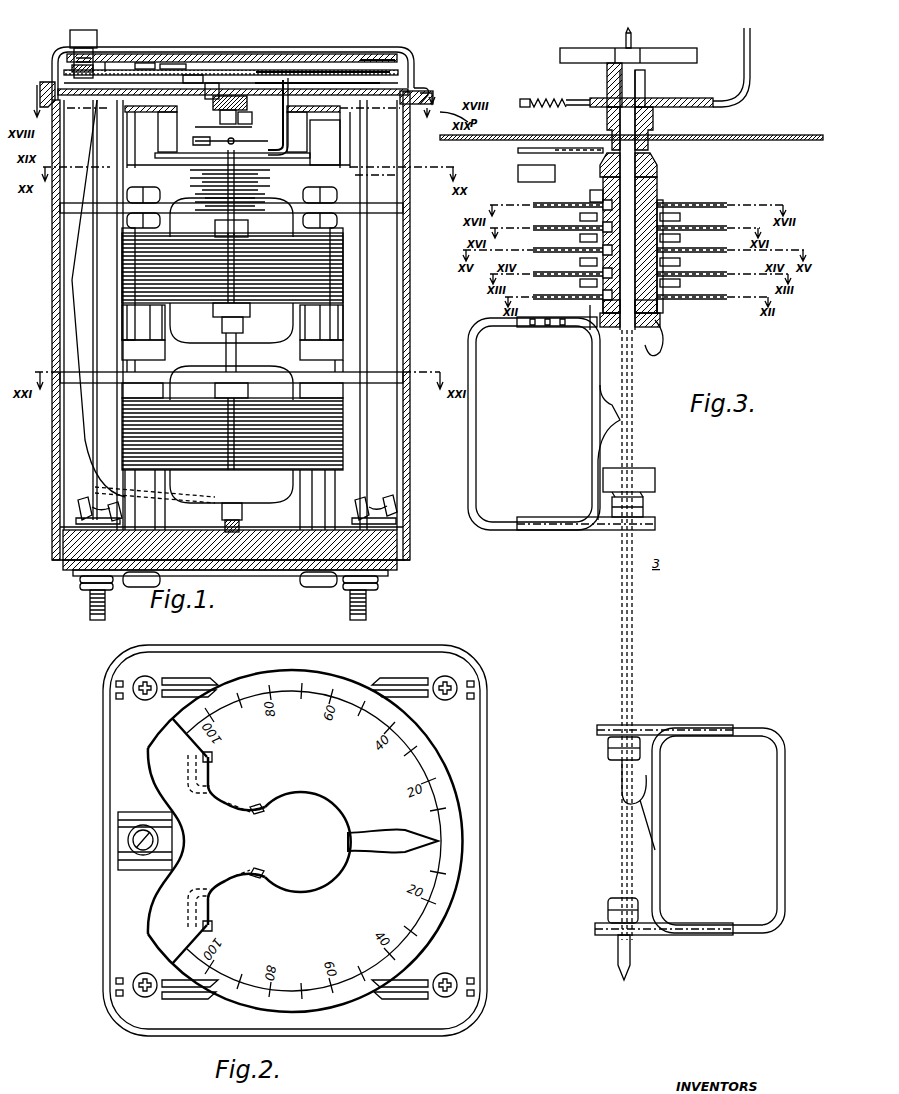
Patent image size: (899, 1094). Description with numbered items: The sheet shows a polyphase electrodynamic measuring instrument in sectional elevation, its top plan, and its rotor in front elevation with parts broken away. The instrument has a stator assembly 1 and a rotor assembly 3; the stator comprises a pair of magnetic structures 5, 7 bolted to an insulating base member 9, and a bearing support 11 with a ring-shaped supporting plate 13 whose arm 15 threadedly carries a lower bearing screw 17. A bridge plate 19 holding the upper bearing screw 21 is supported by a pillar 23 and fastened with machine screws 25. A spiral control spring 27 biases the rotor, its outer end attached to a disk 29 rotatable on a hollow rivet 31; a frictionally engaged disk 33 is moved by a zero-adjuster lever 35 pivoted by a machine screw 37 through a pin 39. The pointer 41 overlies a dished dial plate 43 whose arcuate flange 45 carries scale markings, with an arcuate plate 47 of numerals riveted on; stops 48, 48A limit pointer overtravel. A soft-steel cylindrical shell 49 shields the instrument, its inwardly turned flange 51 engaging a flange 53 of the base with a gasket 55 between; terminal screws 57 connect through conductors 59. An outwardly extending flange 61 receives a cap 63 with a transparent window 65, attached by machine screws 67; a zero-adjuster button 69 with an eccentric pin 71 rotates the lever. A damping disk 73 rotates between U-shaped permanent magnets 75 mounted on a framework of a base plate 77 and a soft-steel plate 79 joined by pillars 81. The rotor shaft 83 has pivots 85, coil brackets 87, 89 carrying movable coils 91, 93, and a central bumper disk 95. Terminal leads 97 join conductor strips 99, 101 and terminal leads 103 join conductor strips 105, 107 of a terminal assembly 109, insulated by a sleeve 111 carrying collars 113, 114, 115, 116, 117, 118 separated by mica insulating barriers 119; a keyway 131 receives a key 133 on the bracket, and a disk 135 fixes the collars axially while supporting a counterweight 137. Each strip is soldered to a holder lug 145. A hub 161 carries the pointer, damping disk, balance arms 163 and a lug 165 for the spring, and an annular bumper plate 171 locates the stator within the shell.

In FIG. 1, the stator assembly 1 is at (265, 350).
In FIG. 1, the rotor assembly 3 is at (258, 353).
In FIG. 1, the magnetic structure 5 is at (340, 266).
In FIG. 1, the magnetic structure 7 is at (340, 455).
In FIG. 1, the base member 9 is at (275, 576).
In FIG. 1, the bearing support 11 is at (90, 239).
In FIG. 1, the supporting plate 13 is at (367, 384).
In FIG. 1, the arm 15 is at (165, 510).
In FIG. 1, the bearing screw 17 is at (242, 524).
In FIG. 1, the bridge plate 19 is at (92, 96).
In FIG. 1, the bearing screw 21 is at (233, 96).
In FIG. 1, the pillar 23 is at (357, 179).
In FIG. 1, the machine screws 25 is at (108, 70).
In FIG. 1, the spiral control spring 27 is at (192, 75).
In FIG. 3, the spiral control spring 27 is at (560, 57).
In FIG. 1, the disk 29 is at (240, 110).
In FIG. 1, the hollow rivet 31 is at (247, 117).
In FIG. 1, the disk 33 is at (212, 83).
In FIG. 1, the zero-adjuster lever 35 is at (170, 64).
In FIG. 1, the machine screw 37 is at (143, 63).
In FIG. 1, the pin 39 is at (296, 83).
In FIG. 1, the pointer 41 is at (321, 72).
In FIG. 3, the pointer 41 is at (752, 56).
In FIG. 2, the pointer 41 is at (385, 834).
In FIG. 1, the dial plate 43 is at (416, 74).
In FIG. 1, the arcuate flange 45 is at (409, 55).
In FIG. 2, the arcuate flange 45 is at (445, 800).
In FIG. 1, the arcuate plate 47 is at (370, 59).
In FIG. 2, the arcuate plate 47 is at (406, 752).
In FIG. 2, the stop 48 is at (240, 803).
In FIG. 2, the stop 48A is at (214, 752).
In FIG. 1, the cylindrical shell 49 is at (412, 316).
In FIG. 1, the inwardly turned flange 51 is at (398, 568).
In FIG. 1, the flange 53 is at (405, 537).
In FIG. 1, the gasket 55 is at (404, 560).
In FIG. 1, the terminal screws 57 is at (106, 607).
In FIG. 1, the conductors 59 is at (85, 500).
In FIG. 1, the outwardly extending flange 61 is at (424, 99).
In FIG. 1, the cap 63 is at (388, 54).
In FIG. 2, the cap 63 is at (478, 848).
In FIG. 1, the transparent window 65 is at (284, 75).
In FIG. 2, the machine screws 67 is at (140, 677).
In FIG. 1, the zero-adjuster button 69 is at (70, 36).
In FIG. 2, the zero-adjuster button 69 is at (118, 838).
In FIG. 1, the eccentric pin 71 is at (77, 84).
In FIG. 1, the damping disk 73 is at (277, 150).
In FIG. 3, the damping disk 73 is at (722, 141).
In FIG. 1, the U-shaped permanent magnets 75 is at (160, 130).
In FIG. 1, the base plate 77 is at (340, 119).
In FIG. 1, the plate 79 is at (335, 160).
In FIG. 1, the pillars 81 is at (332, 140).
In FIG. 1, the shaft 83 is at (226, 355).
In FIG. 3, the shaft 83 is at (622, 628).
In FIG. 3, the pivots 85 is at (625, 42).
In FIG. 3, the coil bracket 87 is at (657, 522).
In FIG. 3, the coil bracket 89 is at (597, 731).
In FIG. 3, the coil 91 is at (480, 512).
In FIG. 3, the coil 93 is at (772, 738).
In FIG. 3, the bumper disk 95 is at (655, 488).
In FIG. 3, the terminal leads 97 is at (590, 307).
In FIG. 3, the conductor strip 99 is at (580, 284).
In FIG. 3, the conductor strip 101 is at (580, 263).
In FIG. 3, the terminal leads 103 is at (665, 345).
In FIG. 3, the conductor strip 105 is at (680, 239).
In FIG. 3, the conductor strip 107 is at (680, 218).
In FIG. 3, the terminal assembly 109 is at (745, 187).
In FIG. 3, the insulating sleeve 111 is at (657, 185).
In FIG. 3, the collar 113 is at (660, 305).
In FIG. 3, the collar 114 is at (680, 284).
In FIG. 3, the collar 115 is at (680, 263).
In FIG. 3, the collar 116 is at (580, 239).
In FIG. 3, the collar 117 is at (580, 218).
In FIG. 3, the collar 118 is at (590, 193).
In FIG. 3, the insulating barriers 119 is at (545, 225).
In FIG. 3, the keyway 131 is at (658, 324).
In FIG. 3, the key 133 is at (585, 328).
In FIG. 3, the disk 135 is at (655, 163).
In FIG. 3, the counterweight 137 is at (530, 183).
In FIG. 3, the lug 145 is at (627, 259).
In FIG. 3, the hub 161 is at (648, 130).
In FIG. 3, the balance arms 163 is at (558, 108).
In FIG. 3, the lug 165 is at (608, 76).
In FIG. 1, the annular bumper plate 171 is at (390, 214).